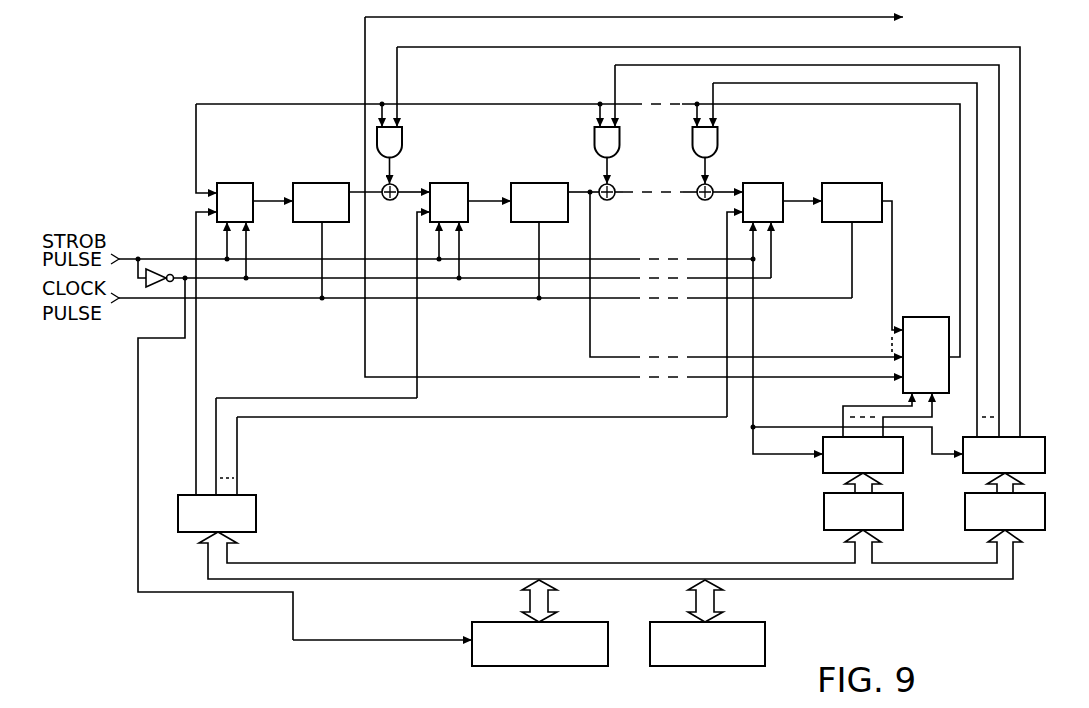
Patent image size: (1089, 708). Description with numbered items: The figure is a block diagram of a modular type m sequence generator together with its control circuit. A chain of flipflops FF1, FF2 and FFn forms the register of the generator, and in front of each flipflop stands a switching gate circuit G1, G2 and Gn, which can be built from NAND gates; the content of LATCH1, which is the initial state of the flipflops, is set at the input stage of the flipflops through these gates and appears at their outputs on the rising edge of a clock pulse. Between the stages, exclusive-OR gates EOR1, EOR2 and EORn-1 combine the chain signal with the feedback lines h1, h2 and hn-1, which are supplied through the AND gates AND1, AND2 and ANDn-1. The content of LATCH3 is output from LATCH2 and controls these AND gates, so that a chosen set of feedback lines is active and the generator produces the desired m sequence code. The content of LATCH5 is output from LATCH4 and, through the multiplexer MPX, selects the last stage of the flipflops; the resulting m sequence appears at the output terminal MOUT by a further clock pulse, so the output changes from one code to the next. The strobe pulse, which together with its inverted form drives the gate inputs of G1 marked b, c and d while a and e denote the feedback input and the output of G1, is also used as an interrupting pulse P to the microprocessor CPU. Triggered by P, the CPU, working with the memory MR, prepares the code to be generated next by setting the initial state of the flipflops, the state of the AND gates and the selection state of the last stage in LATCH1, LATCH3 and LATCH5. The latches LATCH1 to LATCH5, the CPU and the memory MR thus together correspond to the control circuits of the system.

The feedback input signal a to gate G1 a is at (206, 148).
The input signal b to gate G1 from LATCH1 b is at (206, 353).
The strobe pulse input c to gate G1 c is at (218, 242).
The inverted strobe pulse input d to gate G1 d is at (253, 251).
The output signal e of gate G1 to flip-flop FF1 e is at (273, 190).
The feedback line h1 is at (392, 164).
The feedback line h2 is at (609, 164).
The feedback line hn-1 is at (707, 164).
The interrupting pulse P is at (382, 628).
The output terminal of the m sequence MOUT is at (662, 17).
The AND gate AND1 is at (417, 102).
The AND gate AND2 is at (632, 111).
The AND gate ANDn-1 is at (736, 120).
The exclusive-OR gate EOR1 is at (388, 205).
The exclusive-OR gate EOR2 is at (616, 205).
The exclusive-OR gate EORn-1 is at (680, 205).
The switching gate circuit G1 is at (235, 202).
The switching gate circuit G2 is at (464, 290).
The switching gate circuit Gn is at (774, 300).
The flipflop FF1 is at (321, 242).
The flipflop FF2 is at (539, 242).
The flipflop FFn is at (862, 256).
The multiplexer MPX is at (896, 377).
The latch circuit LATCH1 is at (217, 465).
The latch circuit LATCH2 is at (1004, 455).
The latch circuit LATCH3 is at (1005, 501).
The latch circuit LATCH4 is at (863, 455).
The latch circuit LATCH5 is at (863, 501).
The microprocessor CPU is at (540, 623).
The memory MR is at (707, 623).